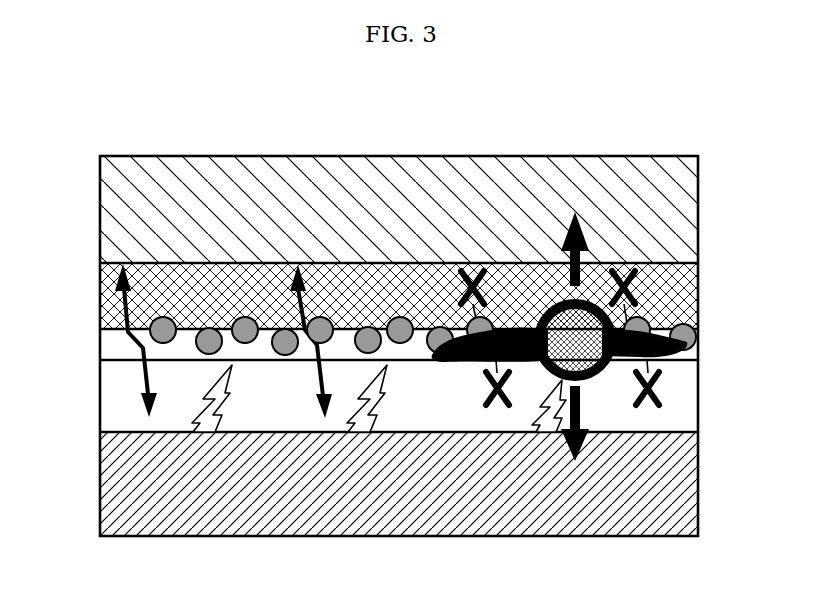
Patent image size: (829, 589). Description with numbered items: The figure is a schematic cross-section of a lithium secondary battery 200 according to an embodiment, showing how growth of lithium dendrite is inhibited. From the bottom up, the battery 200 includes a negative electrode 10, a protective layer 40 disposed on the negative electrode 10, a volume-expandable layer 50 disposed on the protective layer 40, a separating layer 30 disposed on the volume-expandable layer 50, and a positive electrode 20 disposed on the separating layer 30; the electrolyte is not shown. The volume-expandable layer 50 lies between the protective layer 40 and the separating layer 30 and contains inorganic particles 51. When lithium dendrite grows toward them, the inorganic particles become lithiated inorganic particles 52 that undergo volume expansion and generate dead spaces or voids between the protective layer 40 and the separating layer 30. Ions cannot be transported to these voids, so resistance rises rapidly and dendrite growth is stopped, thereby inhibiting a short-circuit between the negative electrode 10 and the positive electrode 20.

The lithium secondary battery 200 is at (422, 114).
The negative electrode 10 is at (109, 486).
The positive electrode 20 is at (109, 213).
The separating layer 30 is at (109, 293).
The protective layer 40 is at (109, 400).
The volume-expandable layer 50 is at (109, 349).
The inorganic particles 51 is at (690, 344).
The inorganic particles lithiated with lithium or lithium ions 52 is at (593, 376).